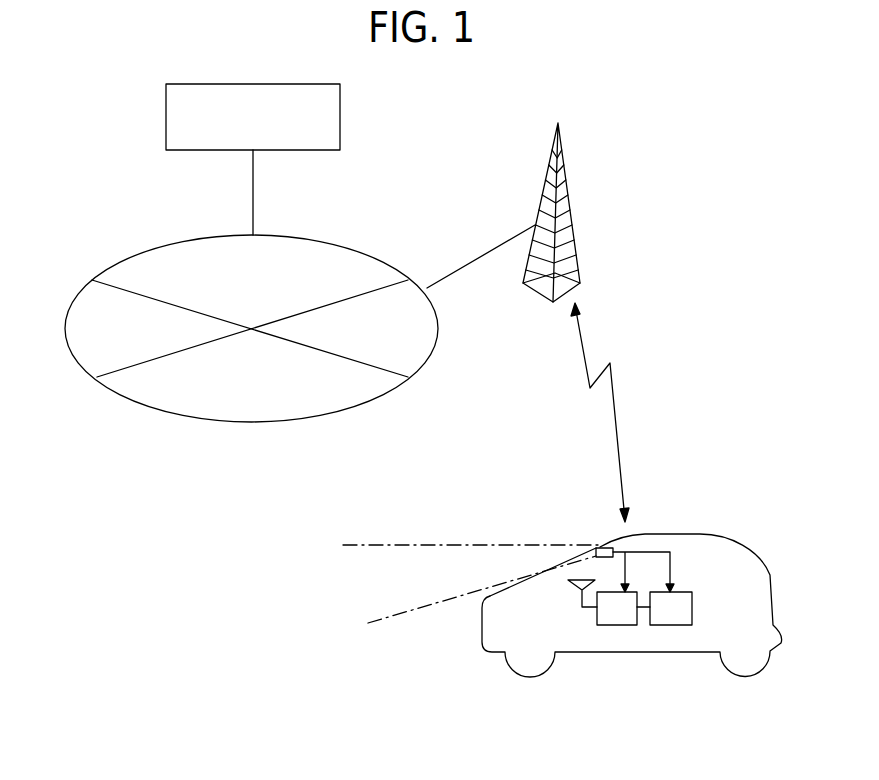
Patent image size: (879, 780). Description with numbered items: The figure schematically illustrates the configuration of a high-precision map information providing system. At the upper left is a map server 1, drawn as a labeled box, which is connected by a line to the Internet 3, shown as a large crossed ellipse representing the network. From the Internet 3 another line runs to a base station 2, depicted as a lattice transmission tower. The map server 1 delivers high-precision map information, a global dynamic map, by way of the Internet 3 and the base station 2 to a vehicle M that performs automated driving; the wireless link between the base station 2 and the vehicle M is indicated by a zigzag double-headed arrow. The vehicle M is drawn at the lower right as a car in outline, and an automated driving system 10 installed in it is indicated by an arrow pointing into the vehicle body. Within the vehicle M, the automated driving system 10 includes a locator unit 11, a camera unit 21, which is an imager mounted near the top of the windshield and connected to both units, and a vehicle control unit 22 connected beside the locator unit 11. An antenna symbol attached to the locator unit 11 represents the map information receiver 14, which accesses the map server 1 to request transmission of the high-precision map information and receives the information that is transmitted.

The map server 1 is at (340, 125).
The base station 2 is at (572, 217).
The Internet 3 is at (250, 422).
The automated driving system 10 is at (703, 592).
The locator unit 11 is at (614, 626).
The map information receiver 14 is at (578, 603).
The camera unit 21 is at (598, 547).
The vehicle control unit 22 is at (675, 626).
The vehicle M is at (692, 533).